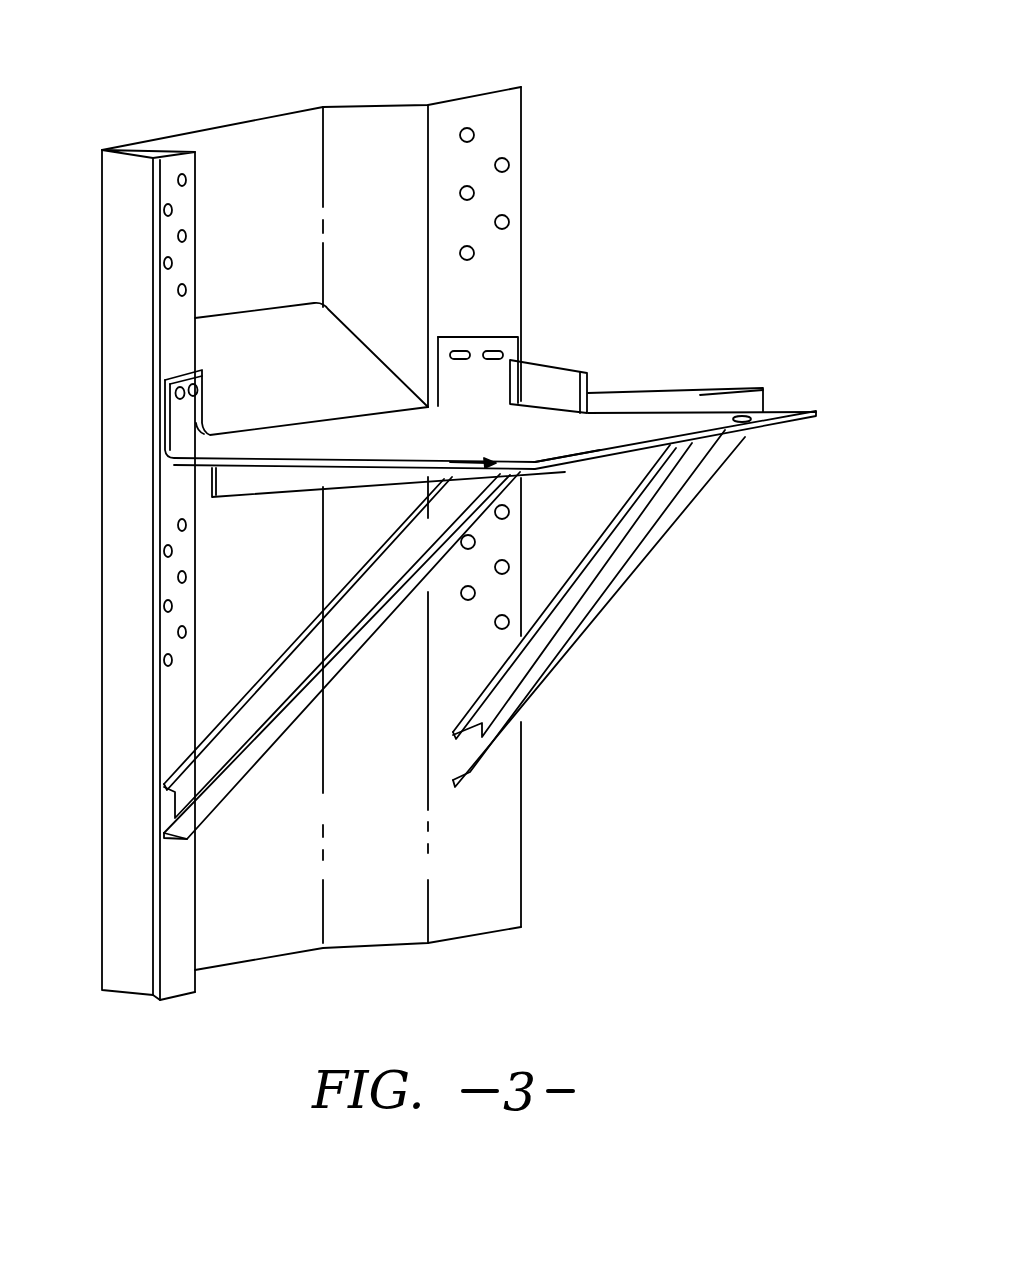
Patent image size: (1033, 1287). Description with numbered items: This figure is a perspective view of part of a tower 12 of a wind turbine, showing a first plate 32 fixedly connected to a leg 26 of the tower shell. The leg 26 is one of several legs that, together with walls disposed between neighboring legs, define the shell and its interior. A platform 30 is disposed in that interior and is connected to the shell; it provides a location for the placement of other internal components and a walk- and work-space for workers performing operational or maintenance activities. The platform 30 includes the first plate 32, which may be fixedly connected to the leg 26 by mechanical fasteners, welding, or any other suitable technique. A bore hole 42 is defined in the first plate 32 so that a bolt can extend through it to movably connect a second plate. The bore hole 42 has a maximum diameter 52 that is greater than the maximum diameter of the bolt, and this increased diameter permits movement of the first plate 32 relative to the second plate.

The tower 12 is at (668, 113).
The leg 26 is at (351, 100).
The platform 30 is at (787, 384).
The first plate 32 is at (525, 420).
The bore hole 42 is at (539, 458).
The maximum diameter 52 is at (593, 470).